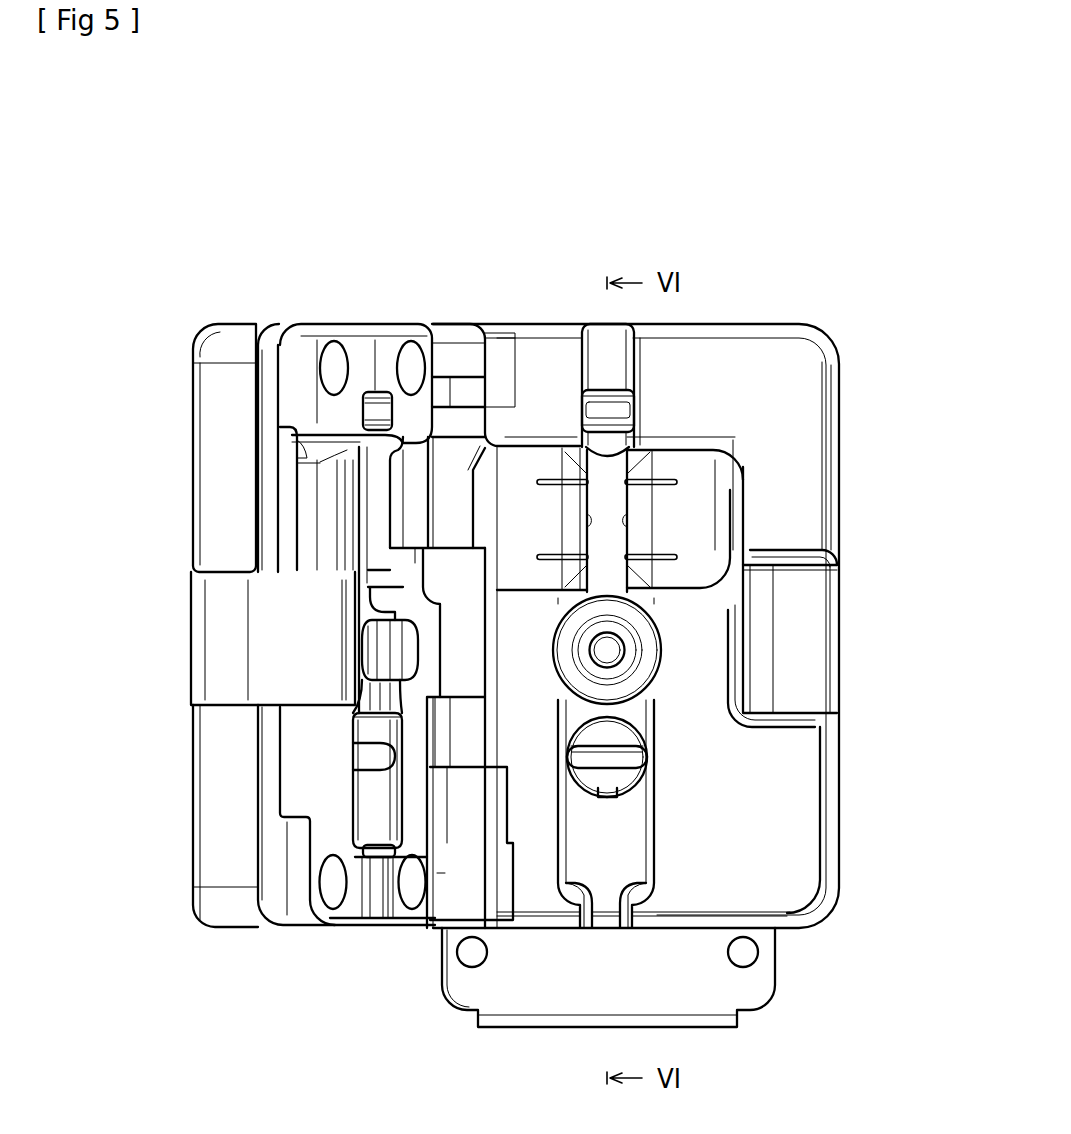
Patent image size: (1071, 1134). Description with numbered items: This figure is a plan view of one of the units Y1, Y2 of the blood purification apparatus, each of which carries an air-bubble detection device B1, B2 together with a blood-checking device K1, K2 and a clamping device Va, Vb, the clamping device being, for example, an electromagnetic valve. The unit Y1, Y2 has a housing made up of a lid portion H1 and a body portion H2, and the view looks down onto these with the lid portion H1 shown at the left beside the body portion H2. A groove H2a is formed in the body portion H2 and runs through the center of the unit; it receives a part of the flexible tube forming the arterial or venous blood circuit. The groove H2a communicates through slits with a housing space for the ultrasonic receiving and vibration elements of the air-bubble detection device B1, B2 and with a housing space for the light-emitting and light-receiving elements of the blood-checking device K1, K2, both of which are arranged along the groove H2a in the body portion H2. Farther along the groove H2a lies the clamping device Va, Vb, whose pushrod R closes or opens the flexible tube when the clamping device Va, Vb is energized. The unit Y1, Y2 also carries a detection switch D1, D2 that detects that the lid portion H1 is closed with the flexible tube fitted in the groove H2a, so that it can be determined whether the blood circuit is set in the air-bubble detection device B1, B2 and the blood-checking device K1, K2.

The lid portion H1 is at (303, 326).
The body portion H2 is at (720, 326).
The groove H2a is at (625, 855).
The unit Y1 is at (645, 628).
The unit Y2 is at (645, 628).
The air-bubble detection device B1 is at (755, 390).
The air-bubble detection device B2 is at (640, 408).
The blood-checking device K1 is at (707, 520).
The blood-checking device K2 is at (628, 520).
The detection switch D1 is at (736, 650).
The detection switch D2 is at (624, 650).
The clamping device Va is at (750, 757).
The clamping device Vb is at (650, 757).
The pushrod R is at (650, 762).